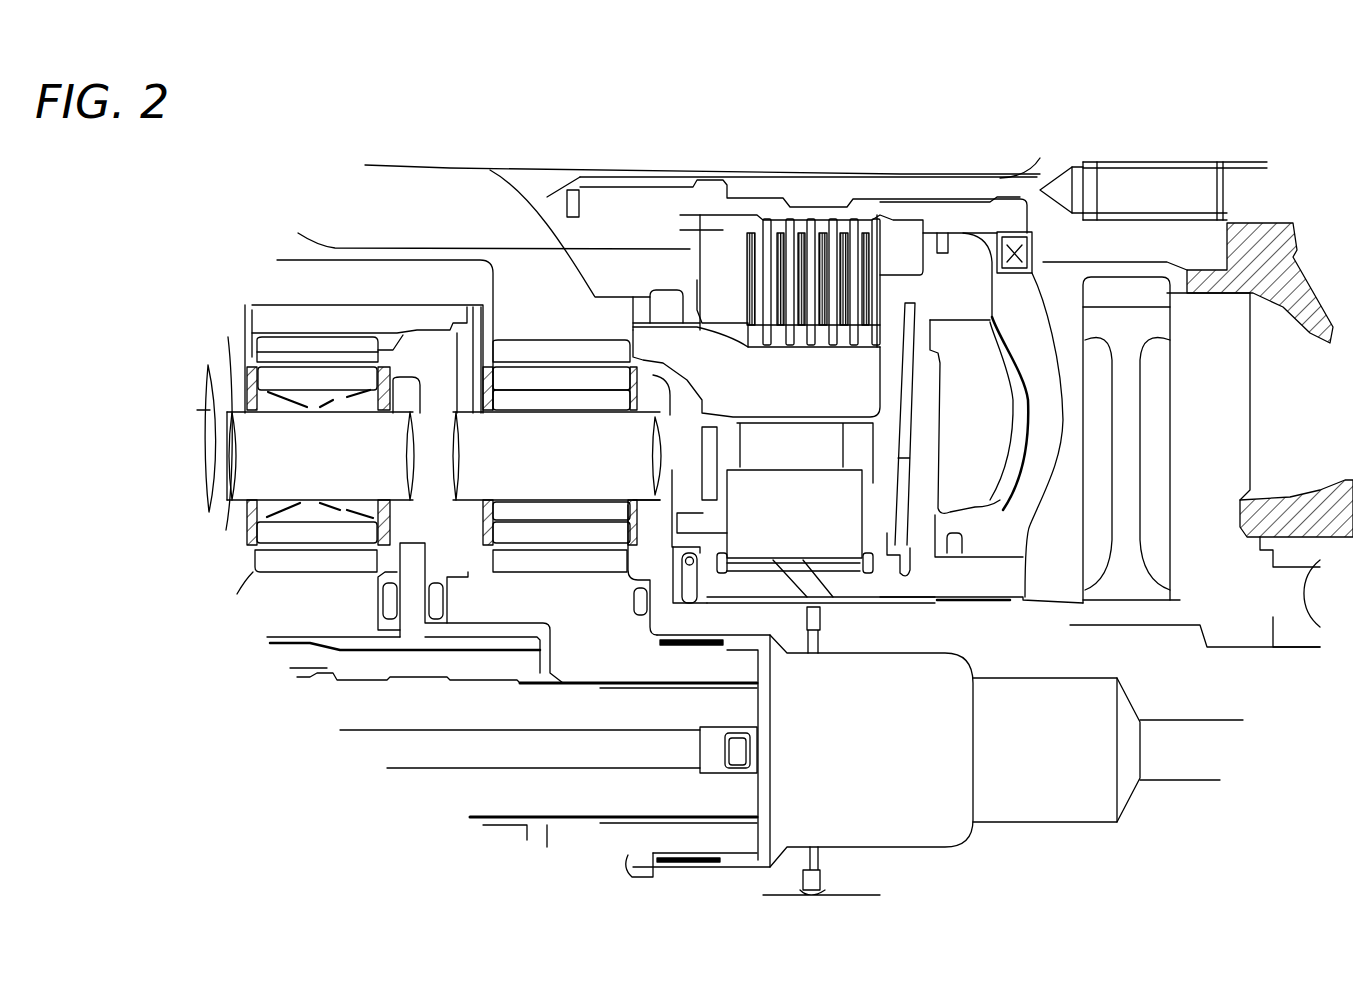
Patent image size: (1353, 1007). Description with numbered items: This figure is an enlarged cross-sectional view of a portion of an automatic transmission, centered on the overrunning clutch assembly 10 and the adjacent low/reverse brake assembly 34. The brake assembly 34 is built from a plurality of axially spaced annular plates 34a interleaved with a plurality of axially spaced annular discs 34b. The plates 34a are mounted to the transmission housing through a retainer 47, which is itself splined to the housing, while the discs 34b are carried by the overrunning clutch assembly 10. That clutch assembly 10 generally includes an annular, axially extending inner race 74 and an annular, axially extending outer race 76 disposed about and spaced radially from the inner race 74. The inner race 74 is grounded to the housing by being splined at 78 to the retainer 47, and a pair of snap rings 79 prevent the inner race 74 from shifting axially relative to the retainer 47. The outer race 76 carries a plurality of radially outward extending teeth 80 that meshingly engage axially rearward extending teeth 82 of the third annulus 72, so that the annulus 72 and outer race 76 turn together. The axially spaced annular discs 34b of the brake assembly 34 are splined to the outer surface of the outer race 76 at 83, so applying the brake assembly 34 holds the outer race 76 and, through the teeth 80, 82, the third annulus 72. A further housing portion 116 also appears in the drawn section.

The overrunning clutch assembly 10 is at (642, 306).
The low/reverse brake assembly 34 is at (752, 222).
The annular plates 34a is at (780, 219).
The annular discs 34b is at (747, 343).
The retainer 47 is at (1027, 295).
The third annulus 72 is at (430, 245).
The inner race 74 is at (872, 518).
The outer race 76 is at (886, 381).
The spline 78 is at (803, 575).
The snap rings 79 is at (868, 575).
The radially outward extending teeth 80 is at (666, 290).
The axially rearward extending teeth 82 is at (640, 272).
The spline 83 is at (818, 337).
The bell housing 116 is at (972, 308).